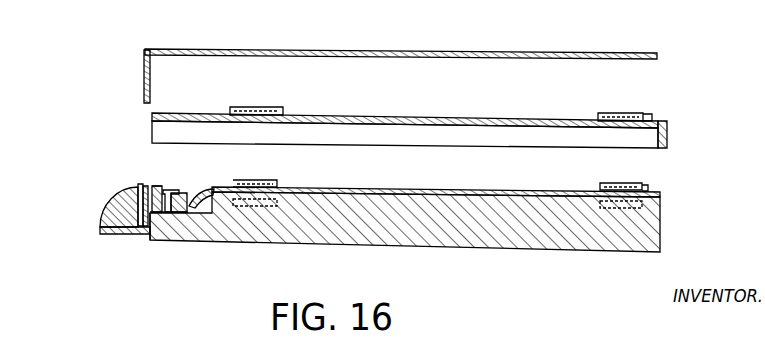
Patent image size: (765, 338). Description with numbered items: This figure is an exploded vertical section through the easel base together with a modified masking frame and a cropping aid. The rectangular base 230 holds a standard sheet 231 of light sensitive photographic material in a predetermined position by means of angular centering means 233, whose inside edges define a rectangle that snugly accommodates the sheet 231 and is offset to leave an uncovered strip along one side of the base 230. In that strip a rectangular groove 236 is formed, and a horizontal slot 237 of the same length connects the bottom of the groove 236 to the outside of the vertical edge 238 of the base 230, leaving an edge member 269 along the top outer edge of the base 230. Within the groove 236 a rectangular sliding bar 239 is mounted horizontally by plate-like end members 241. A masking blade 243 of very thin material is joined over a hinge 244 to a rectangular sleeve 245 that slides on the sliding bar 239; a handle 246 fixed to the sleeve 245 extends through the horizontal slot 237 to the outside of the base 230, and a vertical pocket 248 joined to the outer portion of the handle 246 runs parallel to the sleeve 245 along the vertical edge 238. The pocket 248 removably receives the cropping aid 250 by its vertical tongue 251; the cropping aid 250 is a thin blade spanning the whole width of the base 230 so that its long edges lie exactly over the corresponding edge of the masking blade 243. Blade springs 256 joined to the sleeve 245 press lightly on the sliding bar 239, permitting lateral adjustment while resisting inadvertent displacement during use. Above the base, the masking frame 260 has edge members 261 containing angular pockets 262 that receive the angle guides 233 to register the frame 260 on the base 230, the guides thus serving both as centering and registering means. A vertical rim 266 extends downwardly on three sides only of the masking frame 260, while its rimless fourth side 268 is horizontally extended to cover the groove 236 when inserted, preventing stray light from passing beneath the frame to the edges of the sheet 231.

The base 230 is at (456, 205).
The sheet 231 is at (403, 194).
The angular centering means 233 is at (620, 184).
The rectangular groove 236 is at (212, 217).
The horizontal slot 237 is at (152, 242).
The vertical edge 238 is at (150, 240).
The sliding bar 239 is at (176, 195).
The end members 241 is at (217, 201).
The masking blade 243 is at (403, 192).
The hinge 244 is at (204, 192).
The rectangular sleeve 245 is at (158, 217).
The handle 246 is at (147, 238).
The vertical pocket 248 is at (123, 189).
The cropping aid 250 is at (327, 50).
The vertical tongue 251 is at (143, 78).
The blade springs 256 is at (158, 188).
The masking frame 260 is at (683, 123).
The edge members 261 is at (463, 118).
The angular pockets 262 is at (608, 111).
The vertical rim 266 is at (670, 135).
The fourth side 268 is at (203, 114).
The edge member 269 is at (136, 183).